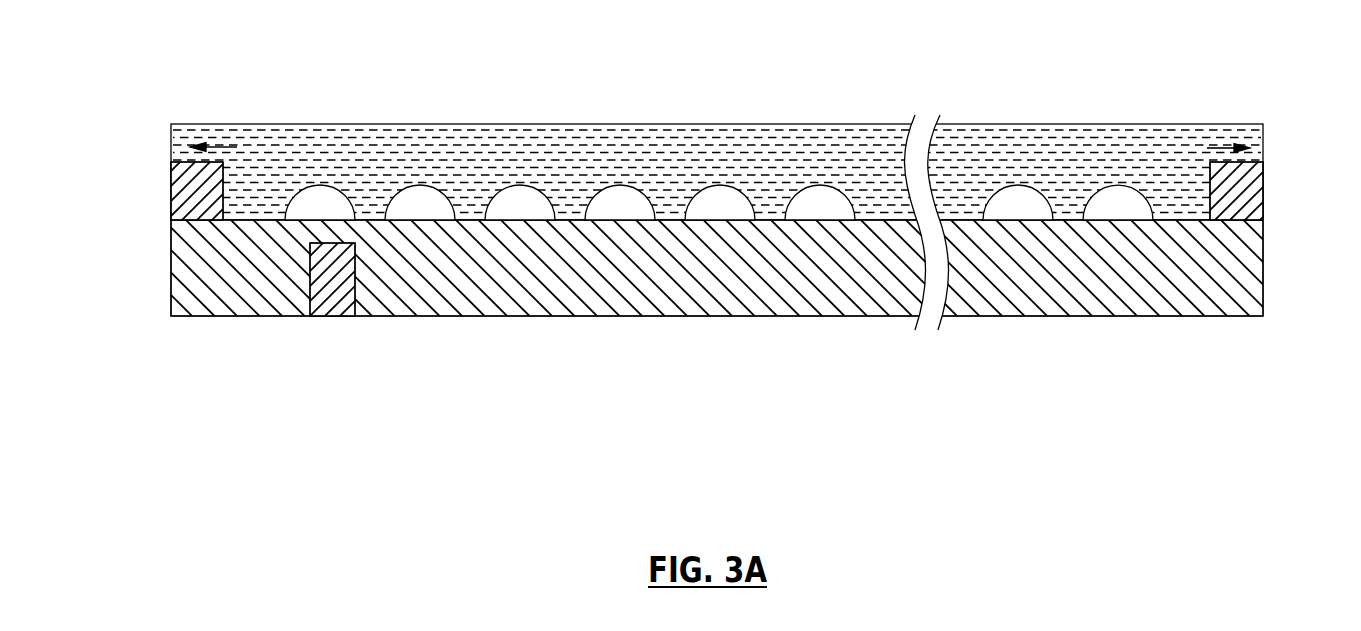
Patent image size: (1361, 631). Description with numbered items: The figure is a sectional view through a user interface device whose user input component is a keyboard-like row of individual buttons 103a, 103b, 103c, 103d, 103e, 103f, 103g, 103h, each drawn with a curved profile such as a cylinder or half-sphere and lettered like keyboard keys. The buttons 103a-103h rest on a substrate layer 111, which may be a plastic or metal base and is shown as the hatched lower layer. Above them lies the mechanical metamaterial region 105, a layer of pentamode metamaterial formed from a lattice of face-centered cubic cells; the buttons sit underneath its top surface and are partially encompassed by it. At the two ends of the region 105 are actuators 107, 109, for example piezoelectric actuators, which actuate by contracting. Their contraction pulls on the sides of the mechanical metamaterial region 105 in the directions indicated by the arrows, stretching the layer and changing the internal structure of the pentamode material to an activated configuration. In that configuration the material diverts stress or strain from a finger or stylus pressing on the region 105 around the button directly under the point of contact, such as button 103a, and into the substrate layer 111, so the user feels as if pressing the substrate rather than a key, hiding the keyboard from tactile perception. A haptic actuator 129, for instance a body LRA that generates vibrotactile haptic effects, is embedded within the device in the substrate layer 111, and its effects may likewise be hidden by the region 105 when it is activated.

The button 103a is at (298, 213).
The button 103b is at (418, 213).
The button 103c is at (518, 213).
The button 103d is at (618, 213).
The button 103e is at (718, 213).
The button 103f is at (818, 213).
The button 103g is at (1012, 213).
The button 103h is at (1112, 213).
The mechanical metamaterial region 105 is at (658, 124).
The actuator 107 is at (1255, 200).
The actuator 109 is at (175, 186).
The substrate layer 111 is at (1193, 317).
The haptic actuator 129 is at (323, 307).